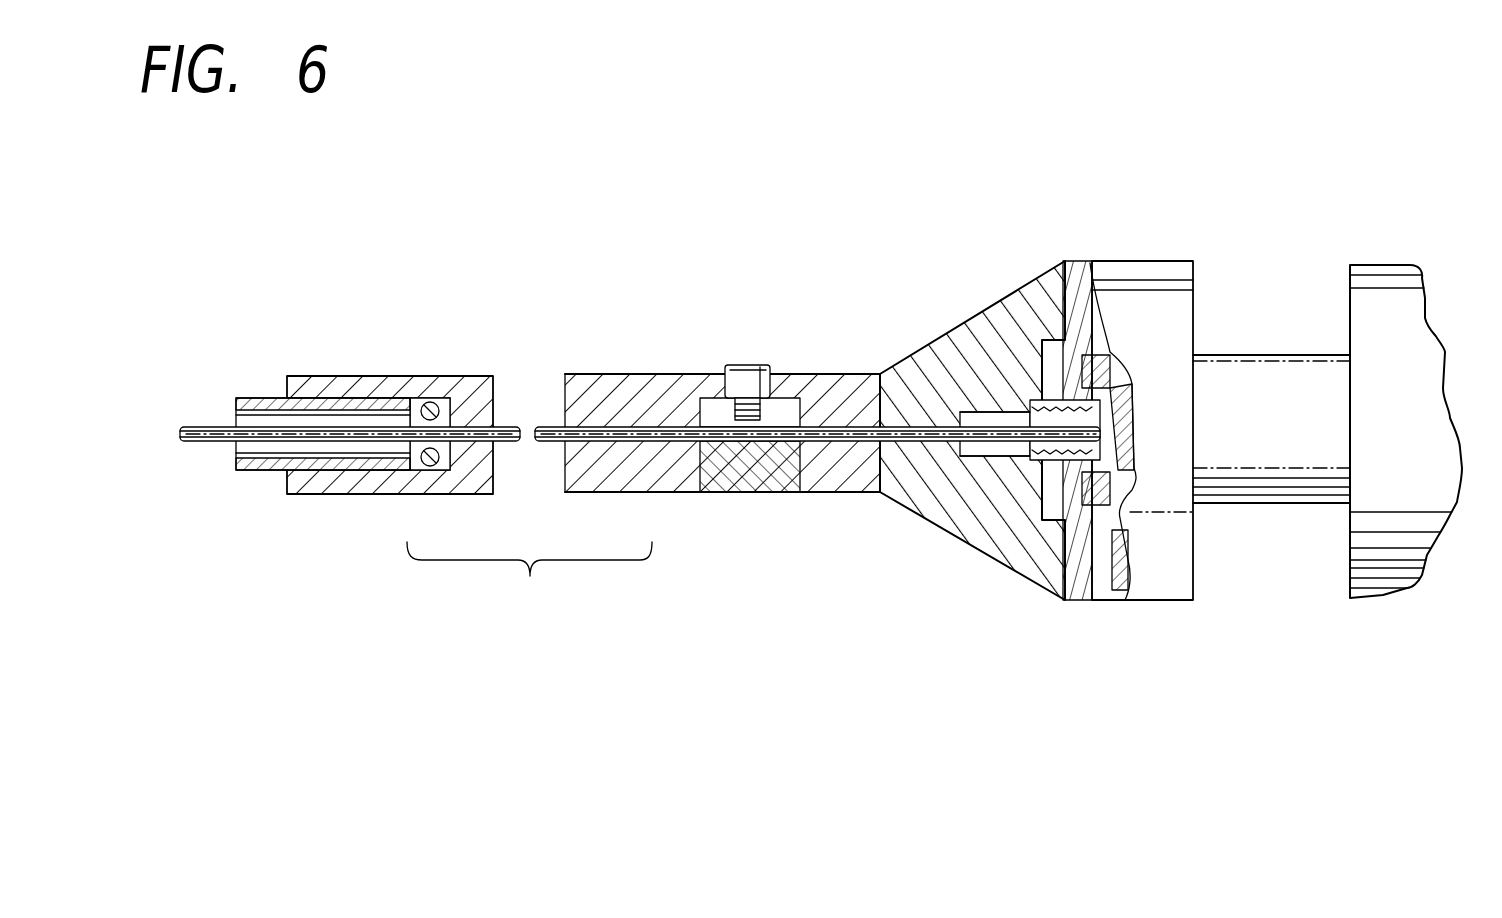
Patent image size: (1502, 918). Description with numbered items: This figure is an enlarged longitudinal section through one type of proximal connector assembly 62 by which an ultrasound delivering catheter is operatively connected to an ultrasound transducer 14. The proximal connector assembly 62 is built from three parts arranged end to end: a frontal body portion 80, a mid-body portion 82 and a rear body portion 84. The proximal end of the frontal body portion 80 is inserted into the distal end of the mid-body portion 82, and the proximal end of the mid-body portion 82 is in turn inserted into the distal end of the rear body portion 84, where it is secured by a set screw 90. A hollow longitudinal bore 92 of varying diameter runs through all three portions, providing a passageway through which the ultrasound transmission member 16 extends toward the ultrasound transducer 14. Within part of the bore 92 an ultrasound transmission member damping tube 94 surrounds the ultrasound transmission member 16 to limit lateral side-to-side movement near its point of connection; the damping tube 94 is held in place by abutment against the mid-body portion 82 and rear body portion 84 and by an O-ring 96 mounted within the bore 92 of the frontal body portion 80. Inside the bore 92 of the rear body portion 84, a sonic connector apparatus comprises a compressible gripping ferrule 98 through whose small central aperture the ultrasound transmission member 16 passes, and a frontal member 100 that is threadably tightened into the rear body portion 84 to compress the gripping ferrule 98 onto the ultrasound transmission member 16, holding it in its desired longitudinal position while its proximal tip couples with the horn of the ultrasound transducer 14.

The ultrasound transducer 14 is at (1417, 345).
The ultrasound transmission member 16 is at (538, 445).
The proximal connector assembly 62 is at (866, 259).
The frontal body portion 80 is at (262, 472).
The mid-body portion 82 is at (470, 388).
The rear body portion 84 is at (1100, 265).
The set screw 90 is at (745, 365).
The hollow longitudinal bore 92 is at (238, 458).
The ultrasound transmission member damping tube 94 is at (615, 400).
The O-ring 96 is at (414, 404).
The compressible gripping ferrule 98 is at (1118, 352).
The frontal member 100 is at (1000, 470).